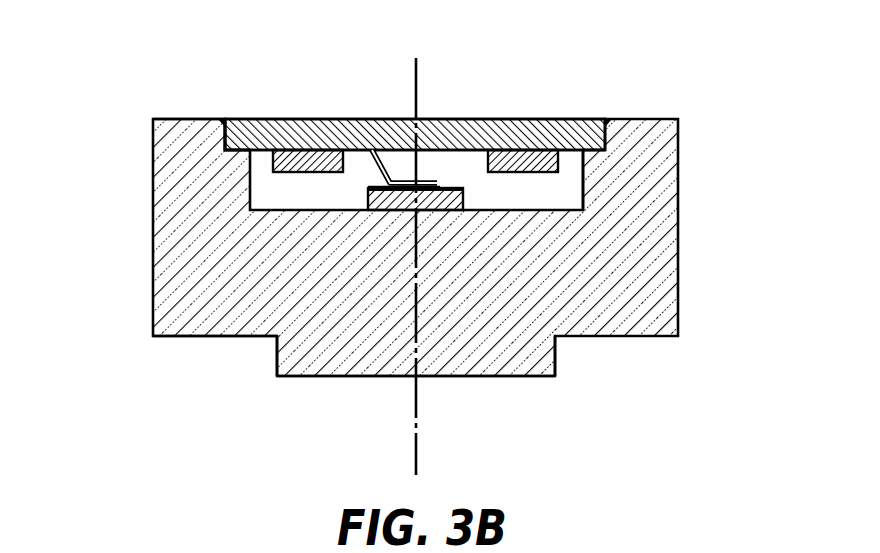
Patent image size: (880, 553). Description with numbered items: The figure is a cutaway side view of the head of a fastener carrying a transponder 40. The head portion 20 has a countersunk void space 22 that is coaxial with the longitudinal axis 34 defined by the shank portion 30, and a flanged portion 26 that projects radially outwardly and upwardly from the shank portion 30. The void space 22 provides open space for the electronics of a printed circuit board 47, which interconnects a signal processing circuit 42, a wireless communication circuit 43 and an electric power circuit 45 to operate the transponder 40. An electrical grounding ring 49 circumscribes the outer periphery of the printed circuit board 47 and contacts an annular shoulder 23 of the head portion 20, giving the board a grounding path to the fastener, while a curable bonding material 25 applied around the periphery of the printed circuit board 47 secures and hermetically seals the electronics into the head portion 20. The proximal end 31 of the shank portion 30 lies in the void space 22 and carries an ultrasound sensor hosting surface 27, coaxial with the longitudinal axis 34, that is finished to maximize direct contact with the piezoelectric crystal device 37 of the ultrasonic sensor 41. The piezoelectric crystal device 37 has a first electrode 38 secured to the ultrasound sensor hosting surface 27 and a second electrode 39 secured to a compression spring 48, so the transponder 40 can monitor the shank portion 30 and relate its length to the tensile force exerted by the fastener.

The head portion 20 is at (149, 334).
The void space 22 is at (331, 204).
The annular shoulder 23 is at (250, 150).
The curable bonding material 25 is at (222, 118).
The flanged portion 26 is at (186, 337).
The ultrasound sensor hosting surface 27 is at (470, 206).
The shank portion 30 is at (269, 359).
The proximal end 31 is at (276, 377).
The longitudinal axis 34 is at (418, 410).
The piezoelectric crystal device 37 is at (463, 194).
The first electrode 38 is at (432, 212).
The second electrode 39 is at (428, 186).
The transponder 40 is at (440, 114).
The ultrasonic sensor 41 is at (583, 172).
The signal processing circuit 42 is at (547, 114).
The wireless communication circuit 43 is at (530, 162).
The electric power circuit 45 is at (303, 162).
The printed circuit board 47 is at (498, 118).
The compression spring 48 is at (374, 171).
The electrical grounding ring 49 is at (222, 136).